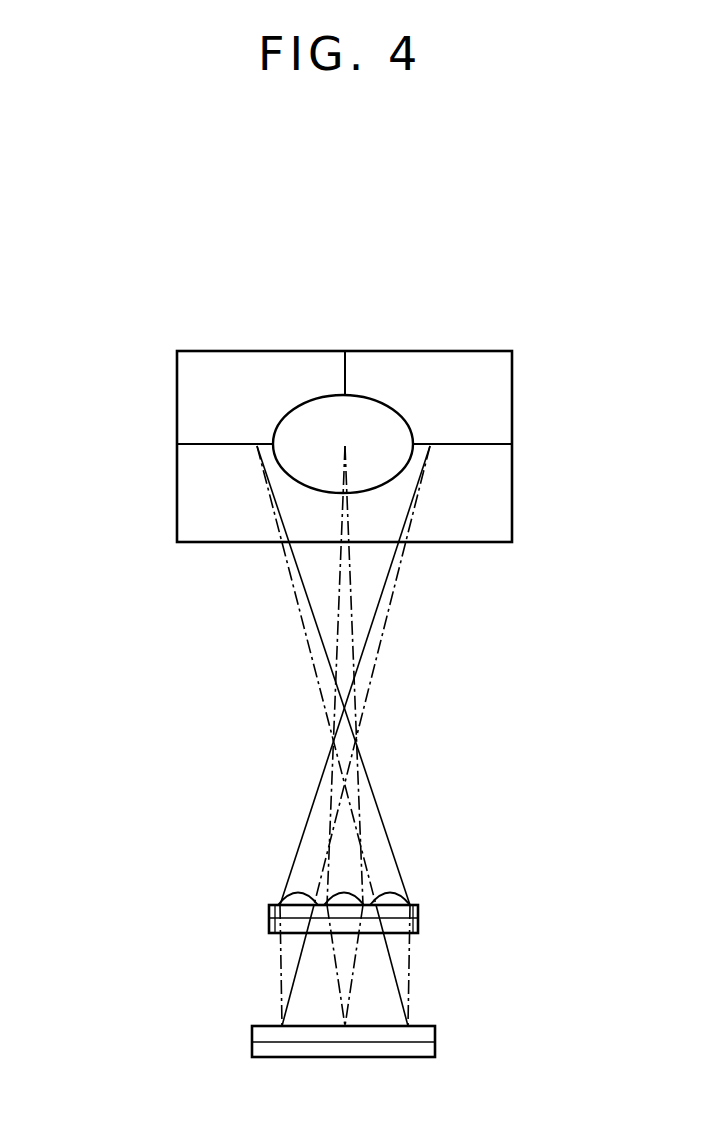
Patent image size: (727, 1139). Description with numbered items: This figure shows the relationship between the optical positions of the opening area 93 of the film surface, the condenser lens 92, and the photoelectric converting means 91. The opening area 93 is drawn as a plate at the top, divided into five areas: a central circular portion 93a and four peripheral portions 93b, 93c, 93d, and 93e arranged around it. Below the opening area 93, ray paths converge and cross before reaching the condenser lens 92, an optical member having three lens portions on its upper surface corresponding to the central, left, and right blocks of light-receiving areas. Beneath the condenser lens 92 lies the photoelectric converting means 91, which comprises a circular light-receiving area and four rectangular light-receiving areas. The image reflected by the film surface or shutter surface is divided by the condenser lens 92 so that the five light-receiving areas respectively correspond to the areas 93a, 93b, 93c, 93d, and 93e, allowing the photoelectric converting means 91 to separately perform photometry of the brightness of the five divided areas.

The opening area of the film surface 93 is at (260, 351).
The central circular portion 93a is at (372, 410).
The peripheral portion 93b is at (498, 512).
The peripheral portion 93c is at (500, 381).
The peripheral portion 93d is at (184, 512).
The peripheral portion 93e is at (180, 387).
The condenser lens 92 is at (418, 920).
The photoelectric converting means 91 is at (435, 1038).